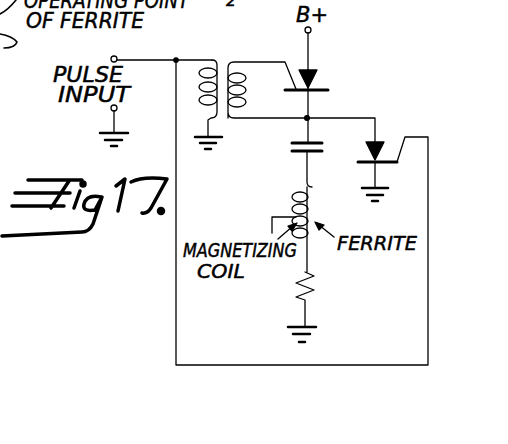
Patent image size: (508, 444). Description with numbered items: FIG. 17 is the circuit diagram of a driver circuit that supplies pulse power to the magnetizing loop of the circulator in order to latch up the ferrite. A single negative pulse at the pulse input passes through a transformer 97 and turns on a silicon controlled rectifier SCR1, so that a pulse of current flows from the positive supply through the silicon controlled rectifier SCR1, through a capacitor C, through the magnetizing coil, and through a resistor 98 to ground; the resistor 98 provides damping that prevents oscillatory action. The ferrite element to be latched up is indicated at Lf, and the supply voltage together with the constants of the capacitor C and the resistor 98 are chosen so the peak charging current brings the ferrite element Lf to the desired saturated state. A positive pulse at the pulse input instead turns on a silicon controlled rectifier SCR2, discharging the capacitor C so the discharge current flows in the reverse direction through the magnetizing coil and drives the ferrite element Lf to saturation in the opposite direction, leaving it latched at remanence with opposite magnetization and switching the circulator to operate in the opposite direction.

The transformer 97 is at (234, 50).
The resistor 98 is at (314, 292).
The silicon controlled rectifier SCR1 is at (334, 105).
The silicon controlled rectifier SCR2 is at (379, 155).
The capacitor C is at (323, 143).
The ferrite element Lf is at (311, 218).